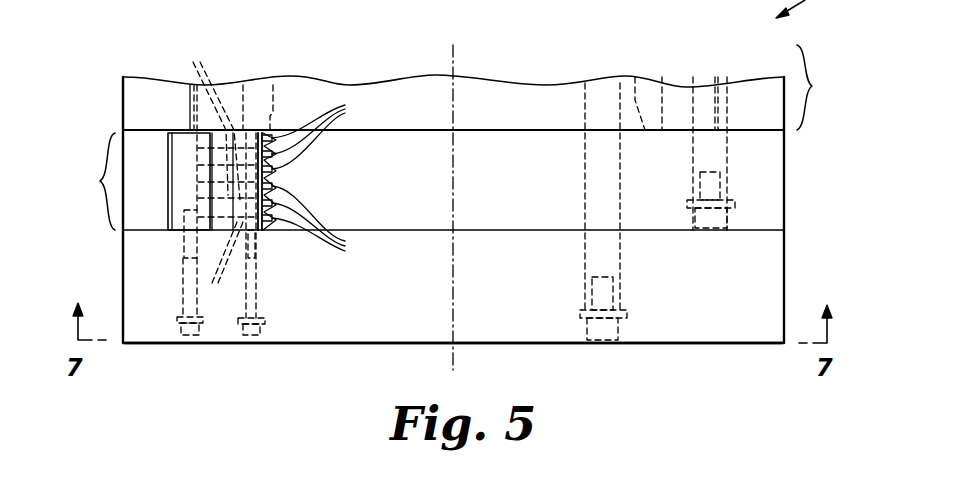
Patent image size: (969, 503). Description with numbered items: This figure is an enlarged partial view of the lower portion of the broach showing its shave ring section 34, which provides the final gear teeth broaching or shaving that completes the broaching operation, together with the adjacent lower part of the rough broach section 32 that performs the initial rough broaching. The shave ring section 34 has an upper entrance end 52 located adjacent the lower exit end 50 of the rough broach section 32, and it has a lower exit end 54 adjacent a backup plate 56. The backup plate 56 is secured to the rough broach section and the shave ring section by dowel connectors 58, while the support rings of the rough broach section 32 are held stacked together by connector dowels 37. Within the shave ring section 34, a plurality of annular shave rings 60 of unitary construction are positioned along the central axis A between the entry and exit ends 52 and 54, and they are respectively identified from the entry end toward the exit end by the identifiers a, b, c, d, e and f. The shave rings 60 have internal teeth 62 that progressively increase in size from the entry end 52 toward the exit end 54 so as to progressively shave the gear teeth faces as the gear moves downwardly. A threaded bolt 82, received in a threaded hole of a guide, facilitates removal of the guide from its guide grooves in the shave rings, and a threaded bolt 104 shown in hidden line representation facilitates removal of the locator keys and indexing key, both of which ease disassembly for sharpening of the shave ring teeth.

The lower exit end 50 is at (122, 109).
The upper entrance end 52 is at (787, 140).
The lower exit end 54 is at (787, 223).
The backup plate 56 is at (772, 272).
The rough broach section 32 is at (820, 87).
The shave ring section 34 is at (91, 181).
The shave rings 60 is at (200, 296).
The internal teeth 62 is at (322, 178).
The connector dowels 37 is at (729, 163).
The dowel connectors 58 is at (584, 262).
The threaded bolt 82 is at (263, 290).
The threaded bolt 104 is at (200, 327).
The central axis A is at (453, 193).
The identifier a is at (184, 128).
The identifier b is at (192, 148).
The identifier c is at (196, 166).
The identifier d is at (197, 183).
The identifier e is at (192, 216).
The identifier f is at (190, 229).